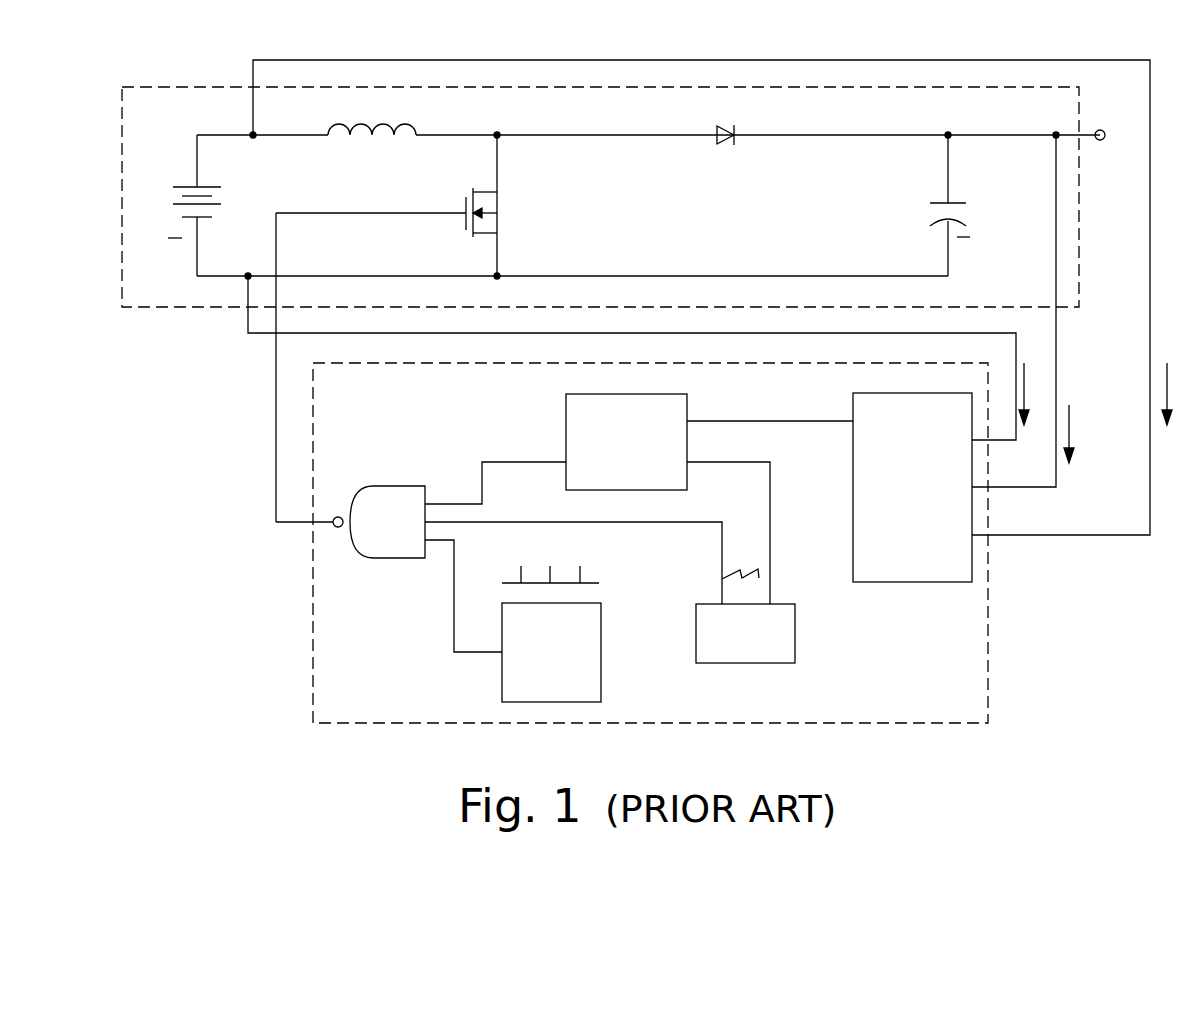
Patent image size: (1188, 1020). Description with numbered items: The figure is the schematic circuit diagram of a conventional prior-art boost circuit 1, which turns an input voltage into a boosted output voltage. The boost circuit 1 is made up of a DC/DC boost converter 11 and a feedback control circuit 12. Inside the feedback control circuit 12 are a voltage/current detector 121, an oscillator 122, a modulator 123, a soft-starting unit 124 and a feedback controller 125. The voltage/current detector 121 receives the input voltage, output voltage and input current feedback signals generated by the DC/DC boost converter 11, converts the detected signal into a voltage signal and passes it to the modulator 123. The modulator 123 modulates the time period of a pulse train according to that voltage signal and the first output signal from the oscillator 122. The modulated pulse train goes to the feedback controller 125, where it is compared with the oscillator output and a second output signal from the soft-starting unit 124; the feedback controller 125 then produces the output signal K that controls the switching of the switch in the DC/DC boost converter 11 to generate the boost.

The boost circuit 1 is at (1099, 42).
The DC/DC boost converter 11 is at (1062, 110).
The feedback control circuit 12 is at (960, 656).
The voltage/current detector 121 is at (863, 458).
The oscillator 122 is at (790, 652).
The modulator 123 is at (583, 412).
The soft-starting unit 124 is at (590, 628).
The feedback controller 125 is at (397, 495).